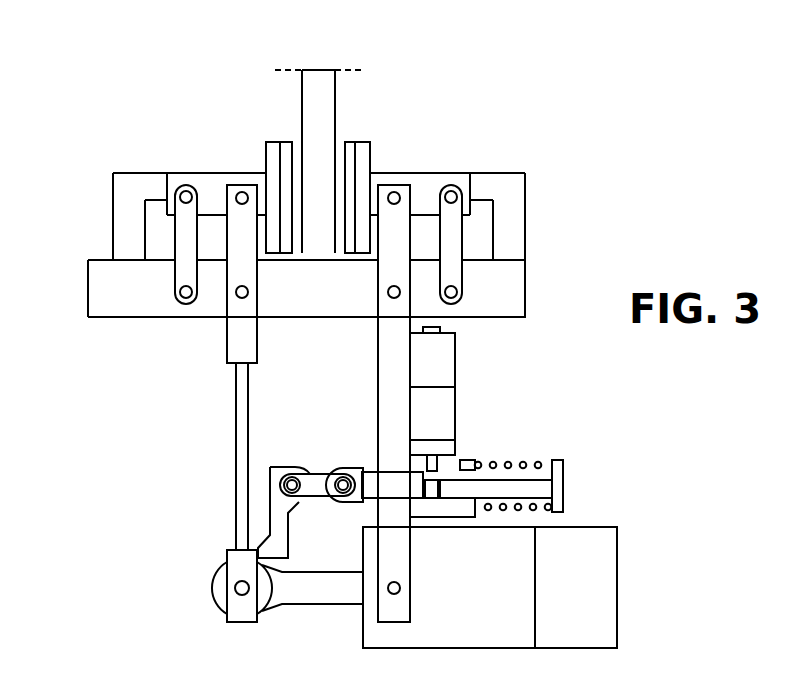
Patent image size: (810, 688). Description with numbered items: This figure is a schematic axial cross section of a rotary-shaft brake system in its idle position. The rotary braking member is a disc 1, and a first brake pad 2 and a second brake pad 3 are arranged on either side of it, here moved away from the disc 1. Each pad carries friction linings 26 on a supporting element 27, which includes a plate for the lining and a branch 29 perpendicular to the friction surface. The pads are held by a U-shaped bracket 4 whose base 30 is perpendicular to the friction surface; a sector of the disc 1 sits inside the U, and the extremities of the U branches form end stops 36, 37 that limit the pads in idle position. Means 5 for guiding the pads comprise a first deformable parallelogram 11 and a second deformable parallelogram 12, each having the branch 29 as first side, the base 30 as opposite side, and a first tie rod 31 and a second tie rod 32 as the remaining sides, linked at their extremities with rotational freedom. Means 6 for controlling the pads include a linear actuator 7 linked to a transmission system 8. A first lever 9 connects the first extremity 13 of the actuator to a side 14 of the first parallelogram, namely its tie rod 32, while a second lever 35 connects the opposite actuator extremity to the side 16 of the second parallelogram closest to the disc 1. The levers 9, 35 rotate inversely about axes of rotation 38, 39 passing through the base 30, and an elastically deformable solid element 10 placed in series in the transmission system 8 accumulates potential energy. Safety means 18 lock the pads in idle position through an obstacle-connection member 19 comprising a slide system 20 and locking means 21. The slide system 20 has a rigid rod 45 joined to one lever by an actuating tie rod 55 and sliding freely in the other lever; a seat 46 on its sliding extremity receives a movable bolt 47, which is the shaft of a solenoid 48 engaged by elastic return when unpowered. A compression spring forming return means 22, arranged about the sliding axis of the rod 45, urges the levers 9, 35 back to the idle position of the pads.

The disc 1 is at (315, 68).
The first brake pad 2 is at (263, 140).
The second brake pad 3 is at (370, 140).
The bracket 4 is at (508, 308).
The means for guiding the movement 5 is at (412, 187).
The means for controlling the movement 6 is at (215, 605).
The linear actuator 7 is at (600, 632).
The transmission system 8 is at (235, 482).
The first lever 9 is at (227, 357).
The elastically deformable solid element 10 is at (235, 512).
The first deformable parallelogram 11 is at (206, 173).
The second deformable parallelogram 12 is at (413, 173).
The first extremity 13 is at (210, 582).
The side of the first deformable parallelogram 14 is at (227, 240).
The side of the second deformable parallelogram 16 is at (410, 240).
The safety means 18 is at (458, 412).
The obstacle-connection member 19 is at (440, 478).
The slide system 20 is at (328, 465).
The means for locking the slide system 21 is at (458, 435).
The return means 22 is at (532, 507).
The friction linings 26 is at (290, 143).
The supporting element 27 is at (267, 173).
The branch 29 is at (198, 171).
The base 30 is at (100, 295).
The first tie rod 31 is at (175, 220).
The second tie rod 32 is at (225, 250).
The second lever 35 is at (378, 368).
The end stop 36 is at (160, 190).
The end stop 37 is at (488, 180).
The axis of rotation 38 is at (240, 298).
The axis of rotation 39 is at (400, 295).
The rigid rod 45 is at (562, 463).
The seat 46 is at (432, 498).
The movable bolt 47 is at (425, 463).
The solenoid 48 is at (447, 368).
The actuating tie rod 55 is at (310, 472).